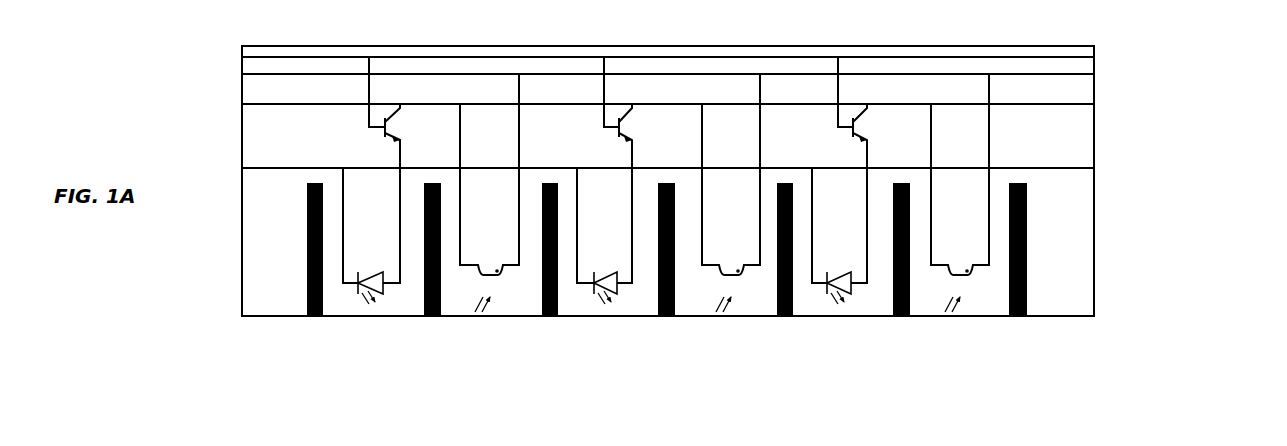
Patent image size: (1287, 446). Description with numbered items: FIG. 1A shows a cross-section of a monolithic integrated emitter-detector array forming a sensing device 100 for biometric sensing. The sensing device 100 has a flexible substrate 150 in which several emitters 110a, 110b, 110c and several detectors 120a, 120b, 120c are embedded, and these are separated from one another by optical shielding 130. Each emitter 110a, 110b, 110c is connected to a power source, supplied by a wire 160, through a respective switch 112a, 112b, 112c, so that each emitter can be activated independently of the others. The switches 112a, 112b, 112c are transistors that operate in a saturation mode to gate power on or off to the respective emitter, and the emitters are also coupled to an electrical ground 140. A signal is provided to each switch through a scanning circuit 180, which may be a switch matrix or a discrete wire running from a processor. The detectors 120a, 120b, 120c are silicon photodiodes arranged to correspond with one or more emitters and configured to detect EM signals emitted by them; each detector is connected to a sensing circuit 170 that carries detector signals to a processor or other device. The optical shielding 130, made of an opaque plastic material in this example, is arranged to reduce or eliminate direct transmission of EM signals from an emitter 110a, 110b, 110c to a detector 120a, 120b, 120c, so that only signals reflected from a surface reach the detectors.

The sensing device 100 is at (1126, 147).
The emitter 110a is at (363, 301).
The emitter 110b is at (608, 307).
The emitter 110c is at (848, 310).
The switch 112a is at (374, 137).
The switch 112b is at (616, 139).
The switch 112c is at (851, 141).
The detector 120a is at (503, 290).
The detector 120b is at (741, 290).
The detector 120c is at (975, 290).
The optical shielding 130 is at (303, 274).
The electrical ground 140 is at (267, 175).
The flexible substrate 150 is at (238, 261).
The wire 160 is at (238, 107).
The sensing circuit 170 is at (238, 76).
The scanning circuit 180 is at (238, 55).